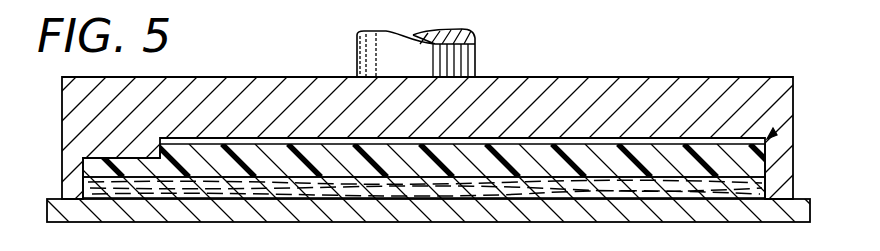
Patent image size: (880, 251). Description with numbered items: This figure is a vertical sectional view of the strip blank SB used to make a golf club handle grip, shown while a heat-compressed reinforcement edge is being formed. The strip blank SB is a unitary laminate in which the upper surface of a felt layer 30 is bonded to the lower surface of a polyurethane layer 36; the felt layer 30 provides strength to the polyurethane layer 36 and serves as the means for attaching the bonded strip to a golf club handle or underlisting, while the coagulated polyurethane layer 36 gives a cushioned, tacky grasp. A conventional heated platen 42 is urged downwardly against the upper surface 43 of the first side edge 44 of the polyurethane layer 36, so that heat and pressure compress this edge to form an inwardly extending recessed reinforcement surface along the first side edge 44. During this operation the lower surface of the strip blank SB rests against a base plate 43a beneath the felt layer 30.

The heated platen 42 is at (582, 82).
The upper surface 43 is at (473, 145).
The polyurethane layer 36 is at (110, 158).
The first side edge 44 is at (84, 177).
The felt layer 30 is at (417, 170).
The base plate 43a is at (727, 207).
The strip blank SB is at (771, 137).